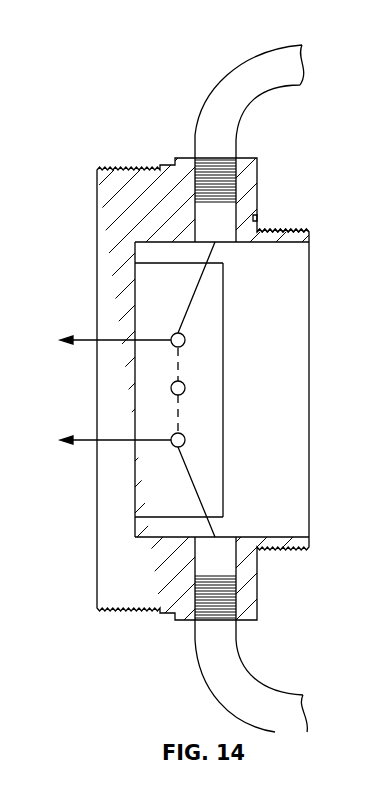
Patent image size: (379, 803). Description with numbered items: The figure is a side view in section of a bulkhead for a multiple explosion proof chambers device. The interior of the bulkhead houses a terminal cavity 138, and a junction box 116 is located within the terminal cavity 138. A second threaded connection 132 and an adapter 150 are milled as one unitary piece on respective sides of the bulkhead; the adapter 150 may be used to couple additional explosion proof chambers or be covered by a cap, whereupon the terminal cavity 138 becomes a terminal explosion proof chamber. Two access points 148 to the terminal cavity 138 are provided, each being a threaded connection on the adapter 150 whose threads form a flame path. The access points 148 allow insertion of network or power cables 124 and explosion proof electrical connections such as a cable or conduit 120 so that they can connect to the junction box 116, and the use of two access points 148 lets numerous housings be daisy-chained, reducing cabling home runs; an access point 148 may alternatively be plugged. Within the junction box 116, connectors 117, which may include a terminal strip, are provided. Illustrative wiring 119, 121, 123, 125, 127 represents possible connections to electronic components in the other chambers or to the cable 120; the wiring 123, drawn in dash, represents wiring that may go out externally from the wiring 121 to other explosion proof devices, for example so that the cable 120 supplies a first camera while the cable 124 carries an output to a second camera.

The junction box 116 is at (223, 362).
The connectors 117 is at (190, 340).
The wiring 119 is at (88, 438).
The cable or conduit 120 is at (228, 88).
The wiring 121 is at (213, 530).
The wiring 123 is at (183, 418).
The network or power cables 124 is at (230, 687).
The wiring 125 is at (213, 248).
The wiring 127 is at (88, 338).
The second threaded connection 132 is at (148, 183).
The terminal cavity 138 is at (295, 478).
The access point 148 is at (217, 172).
The adapter 150 is at (288, 230).